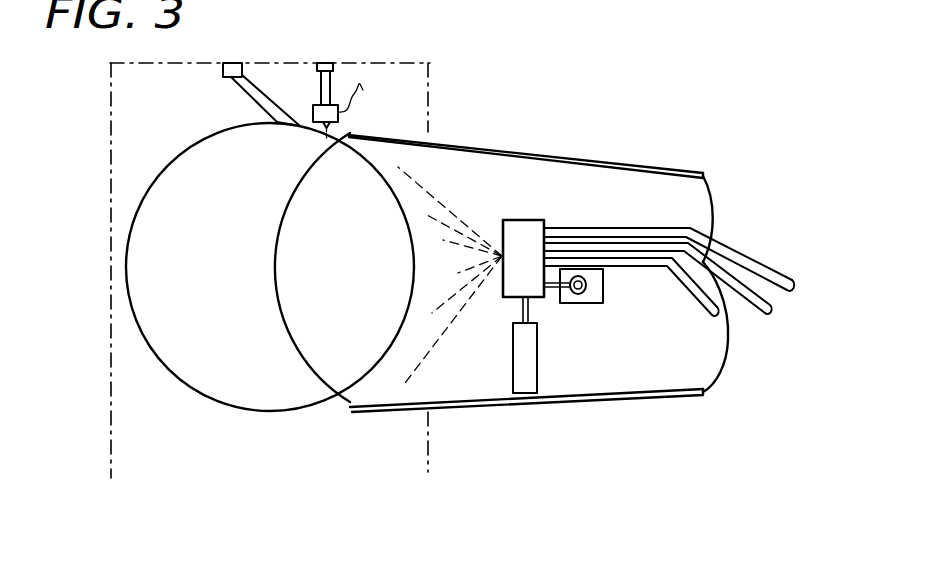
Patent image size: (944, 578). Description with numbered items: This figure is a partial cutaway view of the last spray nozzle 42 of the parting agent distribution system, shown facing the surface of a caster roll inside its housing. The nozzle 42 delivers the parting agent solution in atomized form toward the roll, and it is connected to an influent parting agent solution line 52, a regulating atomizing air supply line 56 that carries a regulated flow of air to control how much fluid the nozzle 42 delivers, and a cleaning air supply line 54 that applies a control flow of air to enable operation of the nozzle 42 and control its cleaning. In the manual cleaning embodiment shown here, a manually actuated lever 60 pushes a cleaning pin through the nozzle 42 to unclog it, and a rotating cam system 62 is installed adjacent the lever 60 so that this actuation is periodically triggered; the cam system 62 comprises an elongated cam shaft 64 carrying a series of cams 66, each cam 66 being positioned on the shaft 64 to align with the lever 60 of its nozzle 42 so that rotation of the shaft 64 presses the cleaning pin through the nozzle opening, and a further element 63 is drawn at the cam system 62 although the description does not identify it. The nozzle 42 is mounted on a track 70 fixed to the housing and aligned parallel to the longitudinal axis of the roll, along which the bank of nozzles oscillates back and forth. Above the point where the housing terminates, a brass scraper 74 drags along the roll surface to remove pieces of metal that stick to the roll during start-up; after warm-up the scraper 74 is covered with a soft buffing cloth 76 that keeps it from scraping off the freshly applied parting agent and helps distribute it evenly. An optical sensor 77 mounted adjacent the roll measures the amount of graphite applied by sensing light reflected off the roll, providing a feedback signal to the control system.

The spray nozzle 42 is at (525, 221).
The influent parting agent solution line 52 is at (753, 262).
The cleaning air supply line 54 is at (724, 316).
The regulating atomizing air supply line 56 is at (775, 304).
The manually actuated lever 60 is at (555, 304).
The rotating cam system 62 is at (583, 320).
The pivot 63 is at (606, 283).
The cam shaft 64 is at (606, 302).
The cam 66 is at (587, 292).
The track 70 is at (522, 310).
The brass scraper 74 is at (247, 90).
The soft buffing cloth 76 is at (277, 122).
The optical sensor 77 is at (338, 117).